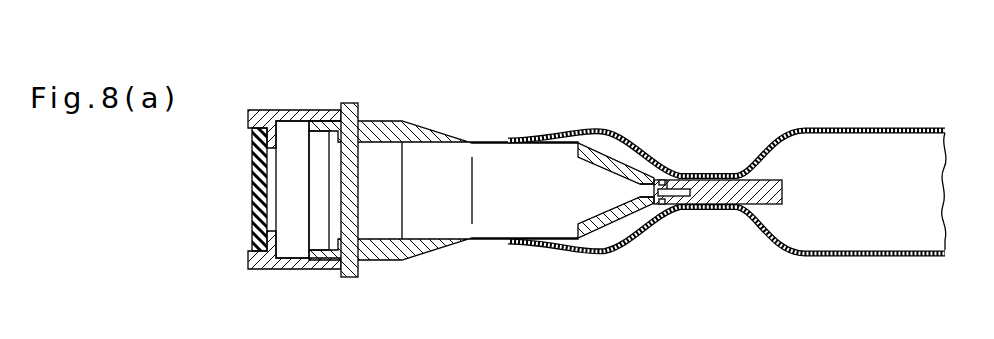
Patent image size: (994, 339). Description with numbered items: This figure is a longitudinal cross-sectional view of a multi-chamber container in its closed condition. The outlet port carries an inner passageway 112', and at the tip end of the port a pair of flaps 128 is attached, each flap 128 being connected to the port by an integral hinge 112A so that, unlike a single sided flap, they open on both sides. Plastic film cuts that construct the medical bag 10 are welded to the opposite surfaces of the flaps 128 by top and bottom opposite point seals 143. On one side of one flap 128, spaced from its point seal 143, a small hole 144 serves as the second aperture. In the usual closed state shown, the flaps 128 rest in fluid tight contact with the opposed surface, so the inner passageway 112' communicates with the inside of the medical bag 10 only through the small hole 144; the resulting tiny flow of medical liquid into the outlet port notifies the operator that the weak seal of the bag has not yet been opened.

The medical bag 10 is at (860, 122).
The inner passageway 112' is at (451, 166).
The integral hinge 112A is at (675, 167).
The small hole 144 is at (707, 178).
The point seal 143 is at (677, 170).
The flap 128 is at (760, 177).